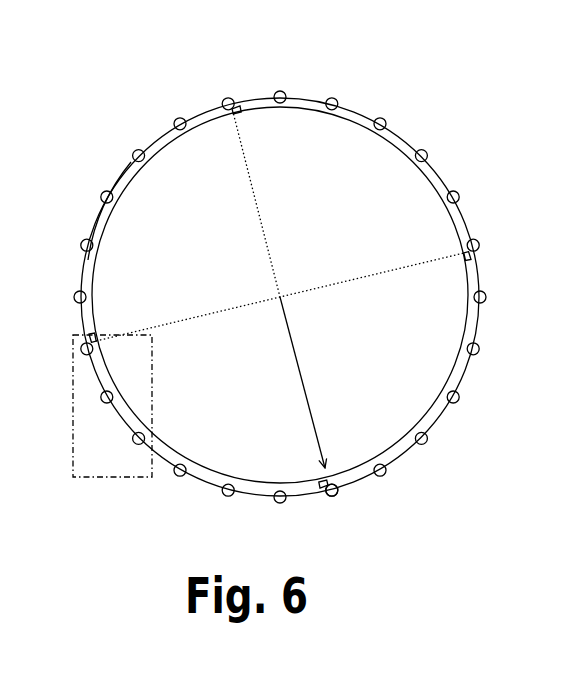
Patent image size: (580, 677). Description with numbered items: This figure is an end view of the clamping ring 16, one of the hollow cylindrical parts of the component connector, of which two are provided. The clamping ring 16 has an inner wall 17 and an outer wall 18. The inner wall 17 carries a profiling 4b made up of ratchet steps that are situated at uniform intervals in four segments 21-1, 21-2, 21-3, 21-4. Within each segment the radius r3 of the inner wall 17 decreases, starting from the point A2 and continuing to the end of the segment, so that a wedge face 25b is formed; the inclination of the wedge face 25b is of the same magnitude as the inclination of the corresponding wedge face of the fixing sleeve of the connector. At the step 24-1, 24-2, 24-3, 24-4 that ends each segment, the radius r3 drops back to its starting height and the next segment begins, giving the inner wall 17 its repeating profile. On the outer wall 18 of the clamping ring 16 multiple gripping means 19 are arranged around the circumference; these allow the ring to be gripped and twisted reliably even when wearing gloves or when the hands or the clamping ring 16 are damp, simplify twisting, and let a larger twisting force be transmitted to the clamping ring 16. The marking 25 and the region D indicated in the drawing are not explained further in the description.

The clamping ring 16 is at (365, 68).
The outer wall 18 is at (416, 138).
The inner wall 17 is at (405, 185).
The gripping means 19 is at (180, 118).
The profiling 4b is at (124, 190).
The step 24-1 is at (96, 344).
The step 24-2 is at (241, 112).
The step 24-3 is at (466, 260).
The step 24-4 is at (329, 484).
The segment 21-1 is at (228, 390).
The segment 21-2 is at (188, 250).
The segment 21-3 is at (343, 220).
The segment 21-4 is at (368, 365).
The radius of the inner wall r3 is at (304, 382).
The wedge face 25b is at (326, 485).
The protrusion 25 is at (567, 228).
The point A2-i A2 is at (567, 78).
The detail region D is at (73, 478).